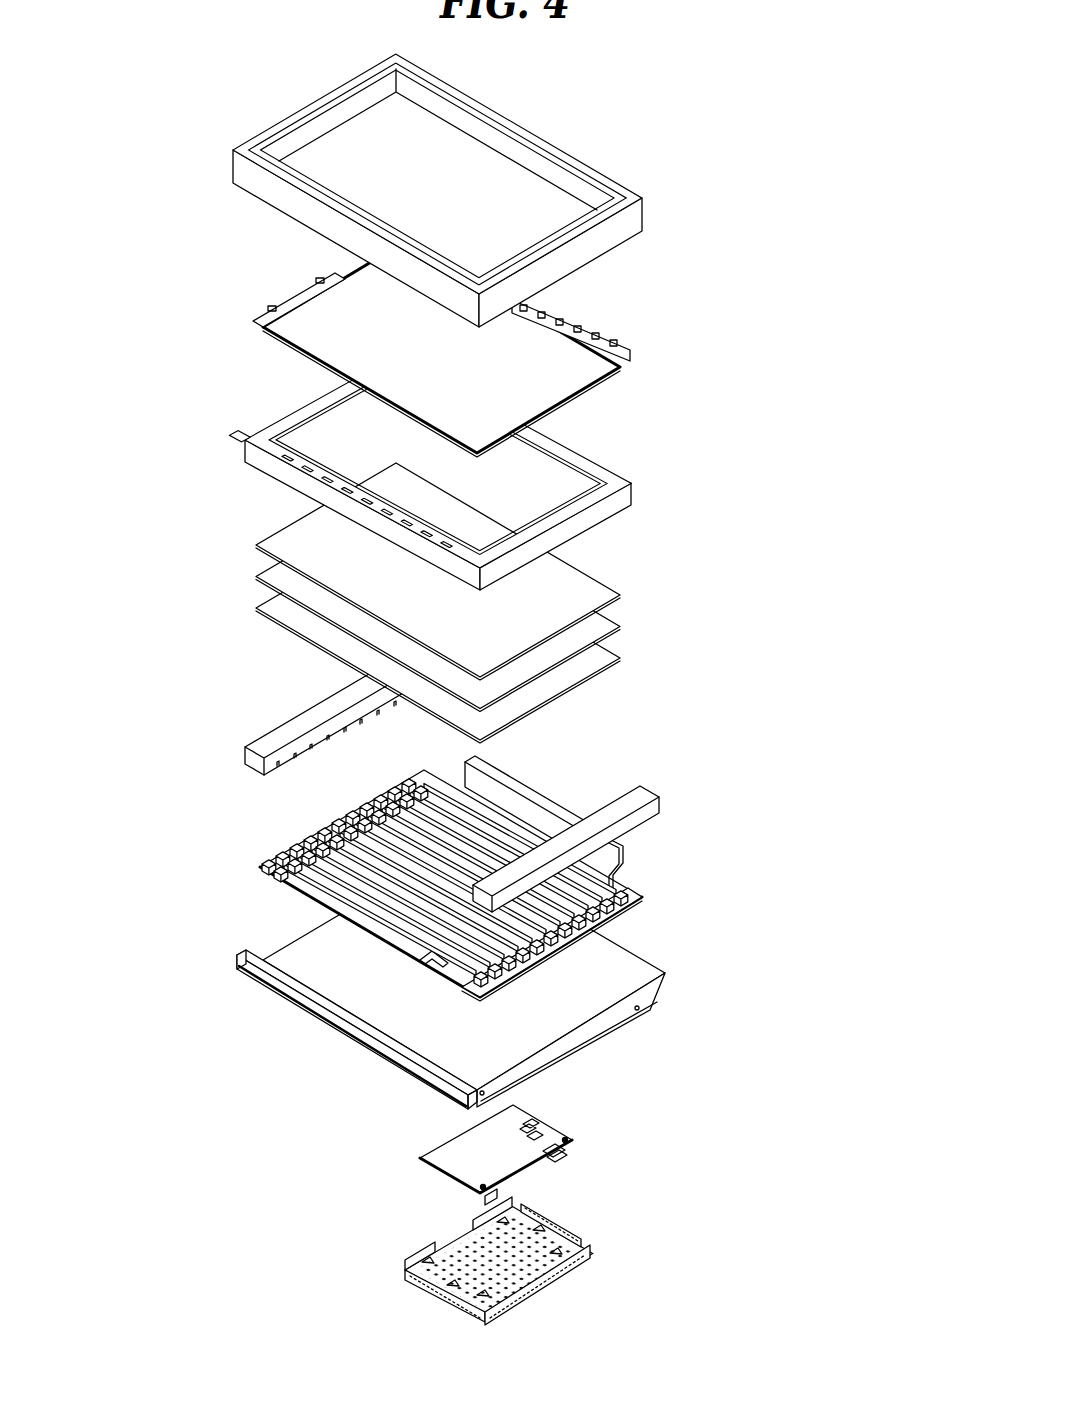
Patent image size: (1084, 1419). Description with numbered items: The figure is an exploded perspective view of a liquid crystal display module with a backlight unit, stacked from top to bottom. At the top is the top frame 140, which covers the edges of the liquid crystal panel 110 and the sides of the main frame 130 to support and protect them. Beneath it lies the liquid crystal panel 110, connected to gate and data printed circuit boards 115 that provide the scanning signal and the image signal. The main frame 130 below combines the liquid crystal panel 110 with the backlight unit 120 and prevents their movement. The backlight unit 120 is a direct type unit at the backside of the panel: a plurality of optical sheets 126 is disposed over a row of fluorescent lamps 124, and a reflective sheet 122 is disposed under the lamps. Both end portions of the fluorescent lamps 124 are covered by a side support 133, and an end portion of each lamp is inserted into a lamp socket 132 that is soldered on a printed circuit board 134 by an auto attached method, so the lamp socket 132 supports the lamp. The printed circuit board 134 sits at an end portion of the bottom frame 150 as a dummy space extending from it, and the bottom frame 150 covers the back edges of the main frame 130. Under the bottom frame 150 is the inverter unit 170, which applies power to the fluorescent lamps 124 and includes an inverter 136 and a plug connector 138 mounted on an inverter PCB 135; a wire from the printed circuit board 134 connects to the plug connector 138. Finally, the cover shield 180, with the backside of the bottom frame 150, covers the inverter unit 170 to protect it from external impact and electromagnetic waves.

The liquid crystal panel 110 is at (590, 337).
The gate and data printed circuit boards 115 is at (631, 350).
The backlight unit 120 is at (514, 786).
The reflective sheet 122 is at (625, 848).
The fluorescent lamps 124 is at (483, 808).
The optical sheets 126 is at (471, 603).
The main frame 130 is at (630, 482).
The lamp socket 132 is at (608, 912).
The side support 133 is at (640, 797).
The printed circuit board 134 is at (600, 890).
The inverter PCB 135 is at (557, 1136).
The inverter 136 is at (533, 1130).
The plug connector 138 is at (560, 1152).
The top frame 140 is at (638, 214).
The bottom frame 150 is at (650, 967).
The inverter unit 170 is at (594, 1137).
The cover shield 180 is at (560, 1277).